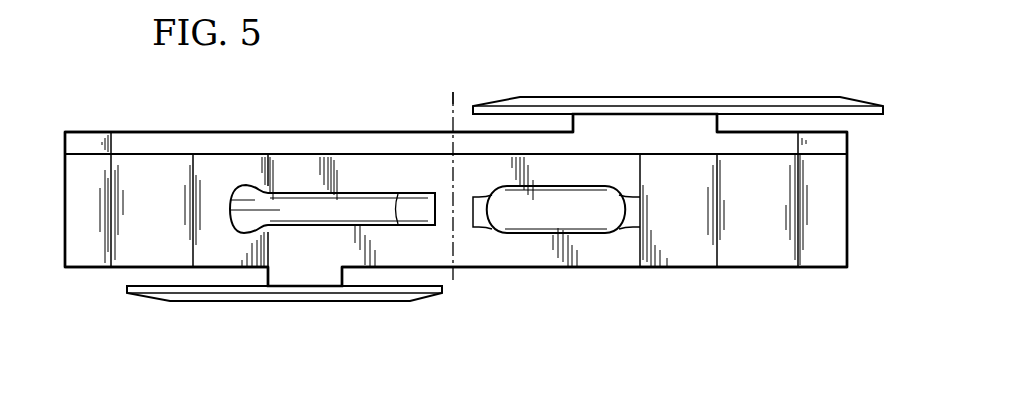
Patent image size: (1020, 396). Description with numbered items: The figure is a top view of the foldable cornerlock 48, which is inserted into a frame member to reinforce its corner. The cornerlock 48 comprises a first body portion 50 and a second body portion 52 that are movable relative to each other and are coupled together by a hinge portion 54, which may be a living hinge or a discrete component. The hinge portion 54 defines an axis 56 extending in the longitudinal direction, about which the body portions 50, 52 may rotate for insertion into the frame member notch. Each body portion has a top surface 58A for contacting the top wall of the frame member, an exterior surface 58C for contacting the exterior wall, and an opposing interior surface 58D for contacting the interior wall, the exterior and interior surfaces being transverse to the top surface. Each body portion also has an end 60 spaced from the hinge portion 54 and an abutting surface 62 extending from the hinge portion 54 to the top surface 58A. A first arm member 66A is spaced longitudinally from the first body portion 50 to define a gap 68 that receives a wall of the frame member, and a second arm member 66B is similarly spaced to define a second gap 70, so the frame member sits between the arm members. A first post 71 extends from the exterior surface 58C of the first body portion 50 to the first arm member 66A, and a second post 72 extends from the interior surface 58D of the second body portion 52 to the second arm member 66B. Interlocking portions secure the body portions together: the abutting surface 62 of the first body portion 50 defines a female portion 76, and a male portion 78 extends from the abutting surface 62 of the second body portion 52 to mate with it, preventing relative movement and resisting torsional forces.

The foldable cornerlock 48 is at (623, 285).
The first body portion 50 is at (737, 243).
The second body portion 52 is at (133, 238).
The hinge portion 54 is at (446, 170).
The axis 56 is at (452, 103).
The top surface 58A is at (174, 216).
The exterior surface 58C is at (211, 129).
The interior surface 58D is at (686, 270).
The end 60 is at (61, 175).
The abutting surface 62 is at (384, 178).
The first arm member 66A is at (780, 102).
The second arm member 66B is at (238, 298).
The gap 68 is at (497, 122).
The second gap 70 is at (132, 275).
The first post 71 is at (636, 122).
The second post 72 is at (303, 272).
The female portion 76 is at (363, 210).
The male portion 78 is at (568, 218).